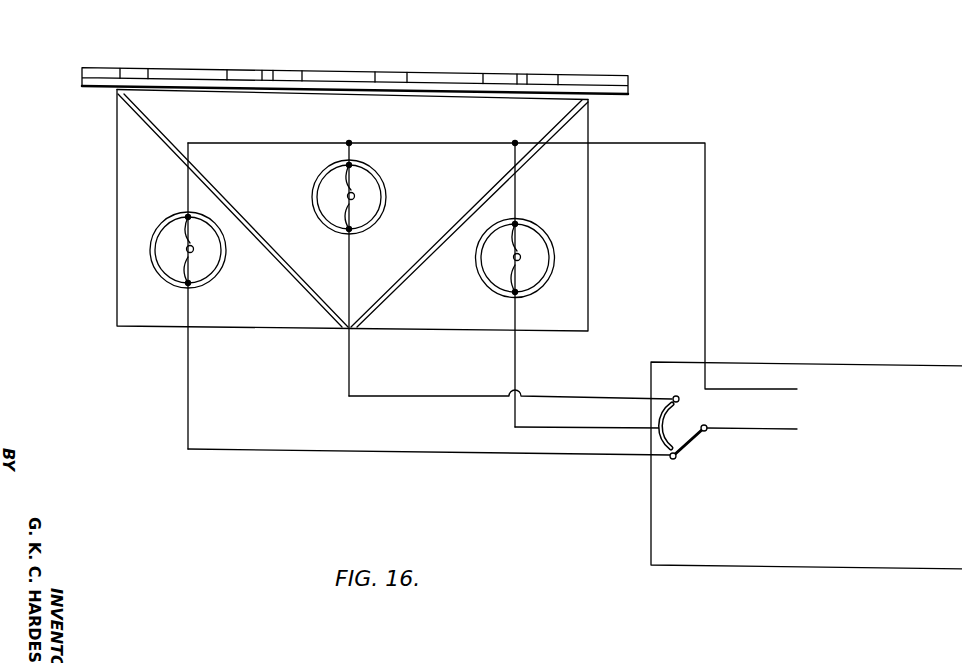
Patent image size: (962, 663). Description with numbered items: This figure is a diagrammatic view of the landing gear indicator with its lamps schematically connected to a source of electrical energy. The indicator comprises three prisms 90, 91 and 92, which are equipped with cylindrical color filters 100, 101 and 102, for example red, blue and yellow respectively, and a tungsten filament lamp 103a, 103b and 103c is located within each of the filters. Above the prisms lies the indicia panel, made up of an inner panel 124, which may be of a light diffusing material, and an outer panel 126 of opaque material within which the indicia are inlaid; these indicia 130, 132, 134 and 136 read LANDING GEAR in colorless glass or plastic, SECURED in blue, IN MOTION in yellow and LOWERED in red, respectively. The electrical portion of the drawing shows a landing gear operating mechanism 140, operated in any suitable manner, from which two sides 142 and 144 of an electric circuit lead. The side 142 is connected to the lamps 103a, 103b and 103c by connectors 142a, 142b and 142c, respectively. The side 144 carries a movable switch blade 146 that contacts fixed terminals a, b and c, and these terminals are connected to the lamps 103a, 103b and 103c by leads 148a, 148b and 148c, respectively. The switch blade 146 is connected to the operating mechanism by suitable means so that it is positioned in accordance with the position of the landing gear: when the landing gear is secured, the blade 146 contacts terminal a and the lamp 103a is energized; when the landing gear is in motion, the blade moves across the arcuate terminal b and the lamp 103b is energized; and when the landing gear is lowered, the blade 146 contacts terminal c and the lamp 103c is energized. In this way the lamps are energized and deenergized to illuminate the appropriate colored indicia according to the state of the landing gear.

The prism 90 is at (462, 125).
The prism 91 is at (119, 153).
The prism 92 is at (578, 173).
The cylindrical color filter 100 is at (381, 176).
The cylindrical color filter 101 is at (166, 226).
The cylindrical color filter 102 is at (538, 230).
The lamp 103a is at (207, 266).
The lamp 103b is at (498, 276).
The lamp 103c is at (367, 209).
The inner panel 124 is at (345, 86).
The outer panel 126 is at (603, 74).
The indicia 130 is at (532, 78).
The indicia 132 is at (384, 76).
The indicia 134 is at (277, 78).
The indicia 136 is at (128, 67).
The landing gear operating mechanism 140 is at (898, 363).
The side of electric circuit 142 is at (244, 140).
The connector 142a is at (188, 189).
The connector 142b is at (517, 196).
The connector 142c is at (349, 149).
The side of electric circuit 144 is at (768, 428).
The movable switch blade 146 is at (691, 441).
The lead 148a is at (288, 449).
The lead 148b is at (515, 426).
The lead 148c is at (425, 394).